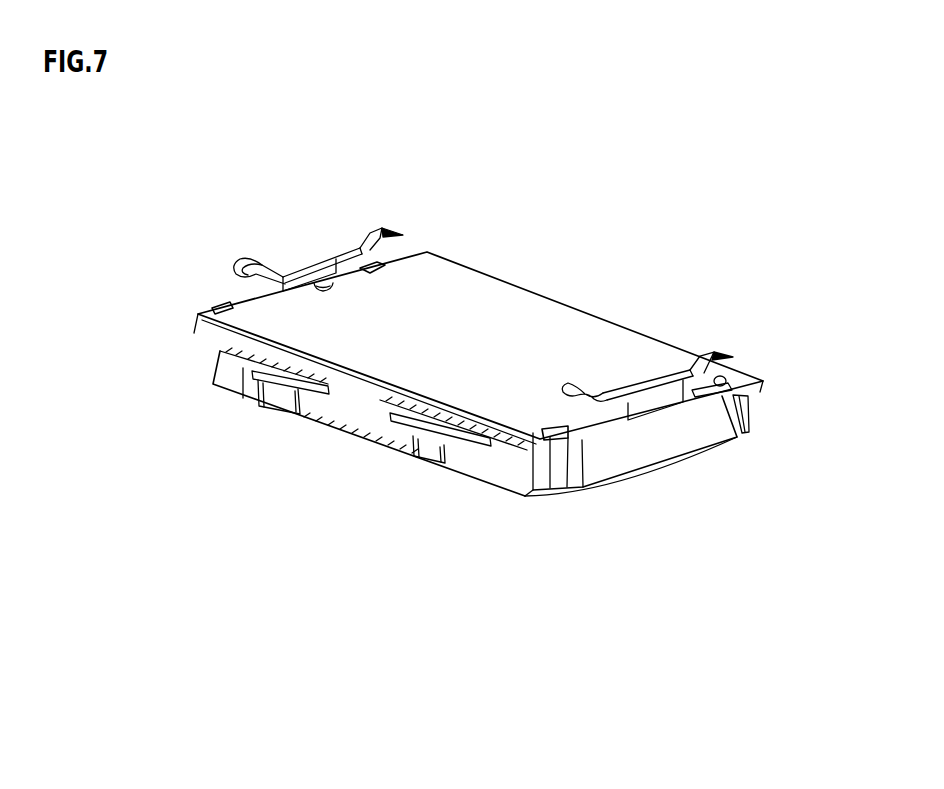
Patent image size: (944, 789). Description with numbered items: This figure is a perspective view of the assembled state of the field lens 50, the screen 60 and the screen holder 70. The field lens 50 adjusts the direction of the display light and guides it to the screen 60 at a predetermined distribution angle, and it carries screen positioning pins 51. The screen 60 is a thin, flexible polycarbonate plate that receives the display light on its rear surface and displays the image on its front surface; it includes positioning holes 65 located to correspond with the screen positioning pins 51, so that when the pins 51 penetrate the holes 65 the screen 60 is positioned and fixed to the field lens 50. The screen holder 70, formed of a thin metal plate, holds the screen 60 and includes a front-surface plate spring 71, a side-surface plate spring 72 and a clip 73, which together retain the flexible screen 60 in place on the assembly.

The field lens 50 is at (697, 452).
The screen positioning pin 51 is at (323, 256).
The screen 60 is at (642, 327).
The positioning hole 65 is at (327, 283).
The screen holder 70 is at (521, 462).
The front-surface plate spring 71 is at (374, 231).
The side-surface plate spring 72 is at (278, 405).
The clip 73 is at (215, 306).